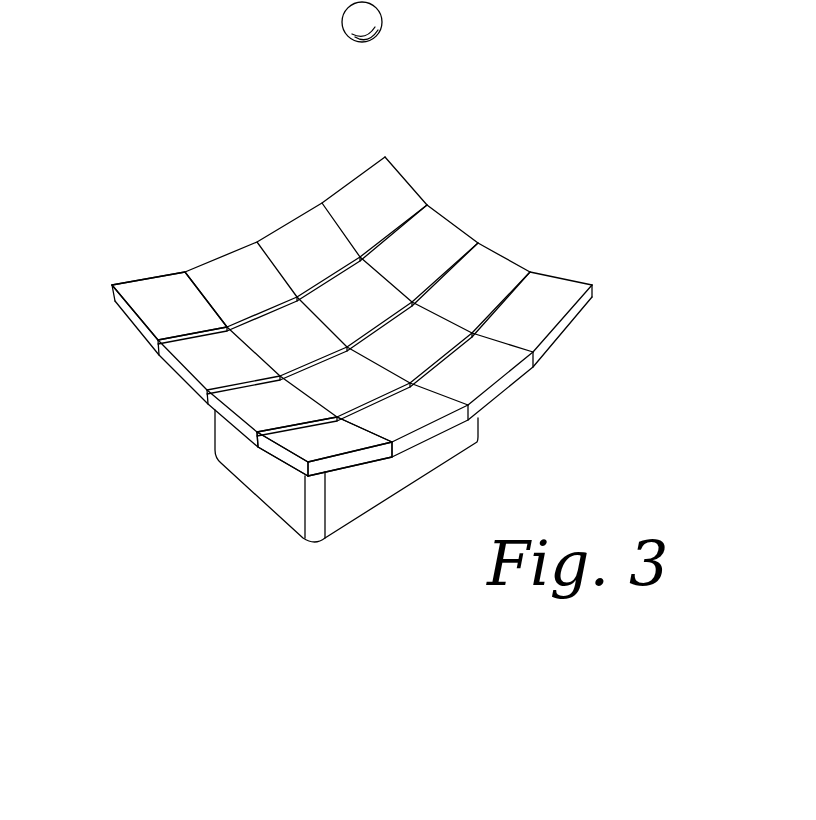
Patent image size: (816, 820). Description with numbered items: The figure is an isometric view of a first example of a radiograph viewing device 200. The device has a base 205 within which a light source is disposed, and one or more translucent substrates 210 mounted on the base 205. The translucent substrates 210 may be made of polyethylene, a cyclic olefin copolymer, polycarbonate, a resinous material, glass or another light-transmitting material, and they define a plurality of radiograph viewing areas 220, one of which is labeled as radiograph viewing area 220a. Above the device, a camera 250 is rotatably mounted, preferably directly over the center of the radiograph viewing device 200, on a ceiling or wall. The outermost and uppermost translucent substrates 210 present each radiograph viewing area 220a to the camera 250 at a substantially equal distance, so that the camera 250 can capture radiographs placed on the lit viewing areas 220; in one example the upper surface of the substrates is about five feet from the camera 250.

The radiograph viewing device 200 is at (608, 261).
The base 205 is at (348, 513).
The translucent substrate 210 is at (288, 453).
The radiograph viewing areas 220 is at (150, 300).
The radiograph viewing area 220a is at (173, 297).
The camera 250 is at (342, 25).